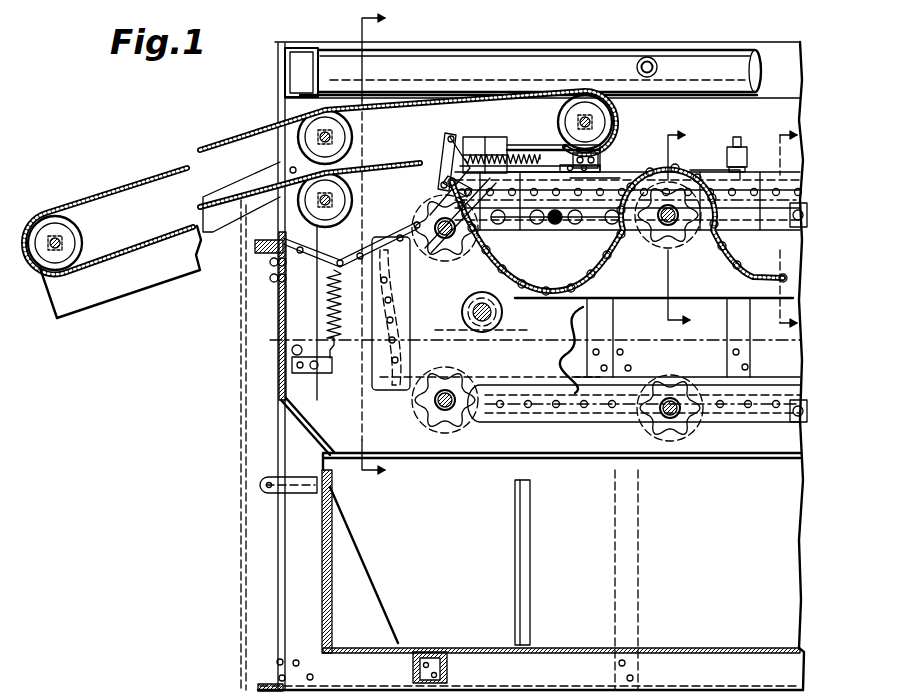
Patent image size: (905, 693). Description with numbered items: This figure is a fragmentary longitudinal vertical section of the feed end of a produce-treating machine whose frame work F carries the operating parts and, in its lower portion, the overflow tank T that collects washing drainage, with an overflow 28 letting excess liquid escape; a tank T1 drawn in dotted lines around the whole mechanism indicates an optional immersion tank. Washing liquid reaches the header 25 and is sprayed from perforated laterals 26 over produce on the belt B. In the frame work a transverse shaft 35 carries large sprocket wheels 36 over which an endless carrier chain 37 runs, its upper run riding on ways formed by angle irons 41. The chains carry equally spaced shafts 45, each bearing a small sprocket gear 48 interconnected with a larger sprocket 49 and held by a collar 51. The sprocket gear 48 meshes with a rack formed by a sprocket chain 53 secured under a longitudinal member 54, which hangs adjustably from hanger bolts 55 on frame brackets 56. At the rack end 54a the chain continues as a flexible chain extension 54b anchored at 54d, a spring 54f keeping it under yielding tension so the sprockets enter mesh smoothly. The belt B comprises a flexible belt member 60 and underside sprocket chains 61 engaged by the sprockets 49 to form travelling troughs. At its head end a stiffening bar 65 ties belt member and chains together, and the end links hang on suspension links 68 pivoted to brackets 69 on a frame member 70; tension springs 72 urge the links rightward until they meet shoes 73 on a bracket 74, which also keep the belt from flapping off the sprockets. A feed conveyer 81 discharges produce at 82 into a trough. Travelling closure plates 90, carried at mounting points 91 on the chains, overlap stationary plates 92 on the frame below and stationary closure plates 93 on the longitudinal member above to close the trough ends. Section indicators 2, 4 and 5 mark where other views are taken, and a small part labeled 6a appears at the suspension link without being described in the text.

The section line 2- 2 is at (384, 245).
The section line 4- 4 is at (687, 226).
The section line 5- 5 is at (793, 218).
The pivot pin 6a is at (398, 185).
The header 25 is at (572, 60).
The perforated laterals 26 is at (648, 58).
The overflow 28 is at (300, 492).
The transverse shaft 35 is at (470, 311).
The sprocket wheel 36 is at (600, 317).
The endless chain 37 is at (648, 250).
The angle iron 41 is at (556, 228).
The shaft 45 is at (685, 236).
The sprocket gear 48 is at (480, 246).
The sprocket 49 is at (436, 246).
The collar 51 is at (437, 405).
The sprocket chain 53 is at (608, 182).
The longitudinal member 54 is at (605, 172).
The rack end 54a is at (500, 140).
The chain extension 54b is at (415, 221).
The anchorage 54d is at (268, 256).
The spring 54f is at (290, 305).
The hanger bolt 55 is at (748, 166).
The frame bracket 56 is at (740, 137).
The belt member 60 is at (556, 302).
The belt chain 61 is at (590, 292).
The stiffening bar 65 is at (440, 184).
The suspension link 68 is at (448, 152).
The bracket 69 is at (493, 125).
The frame member 70 is at (398, 158).
The tension spring 72 is at (516, 150).
The shoe 73 is at (531, 149).
The bracket 74 is at (524, 145).
The feed conveyer 81 is at (134, 184).
The discharge point 82 is at (618, 112).
The travelling closure plate 90 is at (375, 381).
The mounting point 91 is at (338, 315).
The stationary plate 92 is at (766, 305).
The stationary closure plate 93 is at (700, 176).
The belt B is at (712, 180).
The frame work F is at (275, 552).
The overflow tank T is at (318, 584).
The tank T1 is at (243, 432).